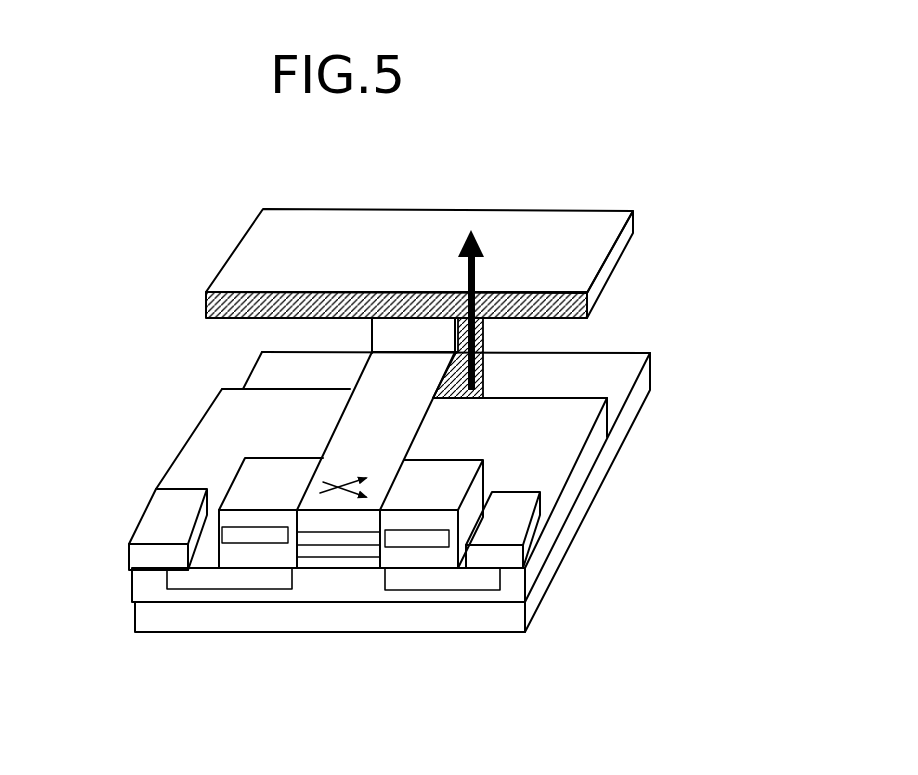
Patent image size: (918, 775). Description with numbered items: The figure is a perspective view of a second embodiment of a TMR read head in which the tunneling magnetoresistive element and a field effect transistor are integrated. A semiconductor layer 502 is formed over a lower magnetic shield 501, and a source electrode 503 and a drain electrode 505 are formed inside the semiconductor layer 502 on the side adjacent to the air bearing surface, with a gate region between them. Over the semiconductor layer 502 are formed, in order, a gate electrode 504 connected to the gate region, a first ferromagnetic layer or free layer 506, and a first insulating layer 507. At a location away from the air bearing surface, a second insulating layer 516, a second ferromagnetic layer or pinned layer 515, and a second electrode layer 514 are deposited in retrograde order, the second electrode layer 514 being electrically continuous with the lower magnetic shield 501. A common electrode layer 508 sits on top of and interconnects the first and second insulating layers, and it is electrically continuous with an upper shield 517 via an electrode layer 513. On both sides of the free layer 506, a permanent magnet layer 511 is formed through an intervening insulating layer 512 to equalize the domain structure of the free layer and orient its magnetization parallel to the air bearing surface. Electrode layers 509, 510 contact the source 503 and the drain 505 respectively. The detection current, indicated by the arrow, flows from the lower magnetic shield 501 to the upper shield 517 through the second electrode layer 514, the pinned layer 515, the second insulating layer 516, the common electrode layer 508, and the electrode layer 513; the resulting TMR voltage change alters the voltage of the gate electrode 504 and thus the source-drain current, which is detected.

The lower magnetic shield 501 is at (390, 618).
The semiconductor layer 502 is at (427, 597).
The source electrode 503 is at (463, 578).
The gate electrode 504 is at (322, 563).
The drain electrode 505 is at (235, 583).
The first ferromagnetic layer (free layer) 506 is at (333, 548).
The first insulating layer 507 is at (342, 540).
The common electrode layer 508 is at (362, 427).
The electrode layer 509 is at (515, 520).
The electrode layer 510 is at (140, 560).
The permanent magnet layer 511 is at (240, 535).
The insulating layer 512 is at (447, 477).
The electrode layer 513 is at (387, 335).
The second electrode layer 514 is at (485, 381).
The second ferromagnetic layer (pinned layer) 515 is at (517, 353).
The second insulating layer 516 is at (485, 335).
The upper shield 517 is at (253, 258).